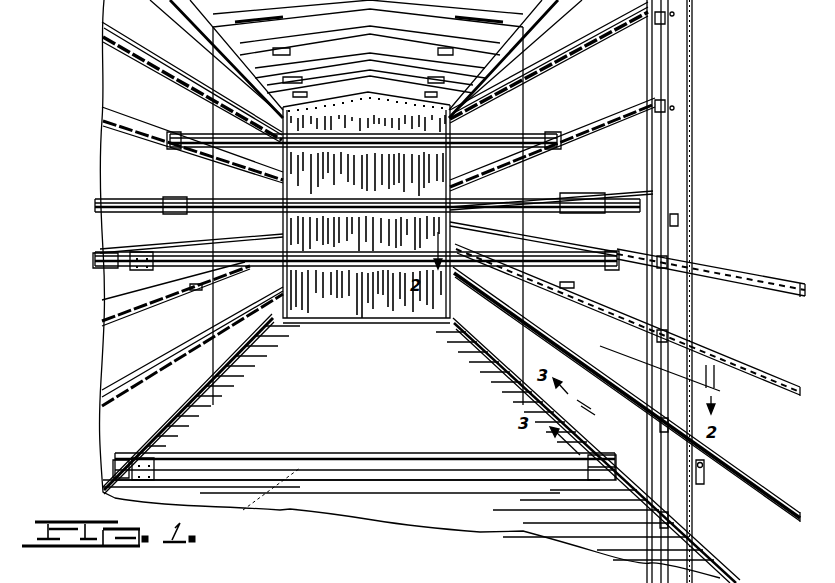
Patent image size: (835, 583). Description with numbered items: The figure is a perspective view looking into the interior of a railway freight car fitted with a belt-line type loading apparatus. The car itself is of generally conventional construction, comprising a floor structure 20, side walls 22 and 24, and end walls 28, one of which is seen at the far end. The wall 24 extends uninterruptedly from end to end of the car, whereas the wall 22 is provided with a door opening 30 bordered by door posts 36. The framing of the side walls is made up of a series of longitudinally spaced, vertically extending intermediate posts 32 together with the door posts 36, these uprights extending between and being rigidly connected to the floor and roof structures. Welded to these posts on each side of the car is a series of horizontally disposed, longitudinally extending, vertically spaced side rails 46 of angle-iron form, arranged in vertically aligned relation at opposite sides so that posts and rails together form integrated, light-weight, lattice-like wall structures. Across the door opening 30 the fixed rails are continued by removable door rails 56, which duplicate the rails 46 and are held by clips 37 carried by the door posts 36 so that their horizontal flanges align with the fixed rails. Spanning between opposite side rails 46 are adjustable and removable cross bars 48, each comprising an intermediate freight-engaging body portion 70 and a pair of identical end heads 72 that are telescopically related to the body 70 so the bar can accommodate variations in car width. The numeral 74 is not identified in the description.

The floor structure 20 is at (361, 409).
The side wall 22 is at (620, 182).
The side wall 24 is at (168, 190).
The end wall 28 is at (455, 198).
The door opening 30 is at (760, 341).
The intermediate post 32 is at (572, 285).
The door post 36 is at (680, 168).
The clip 37 is at (680, 219).
The side rail 46 is at (593, 70).
The cross bar 48 is at (513, 138).
The removable side rail 56 is at (722, 275).
The body portion 70 is at (390, 457).
The end head 72 is at (601, 470).
The lower track 74 is at (143, 441).